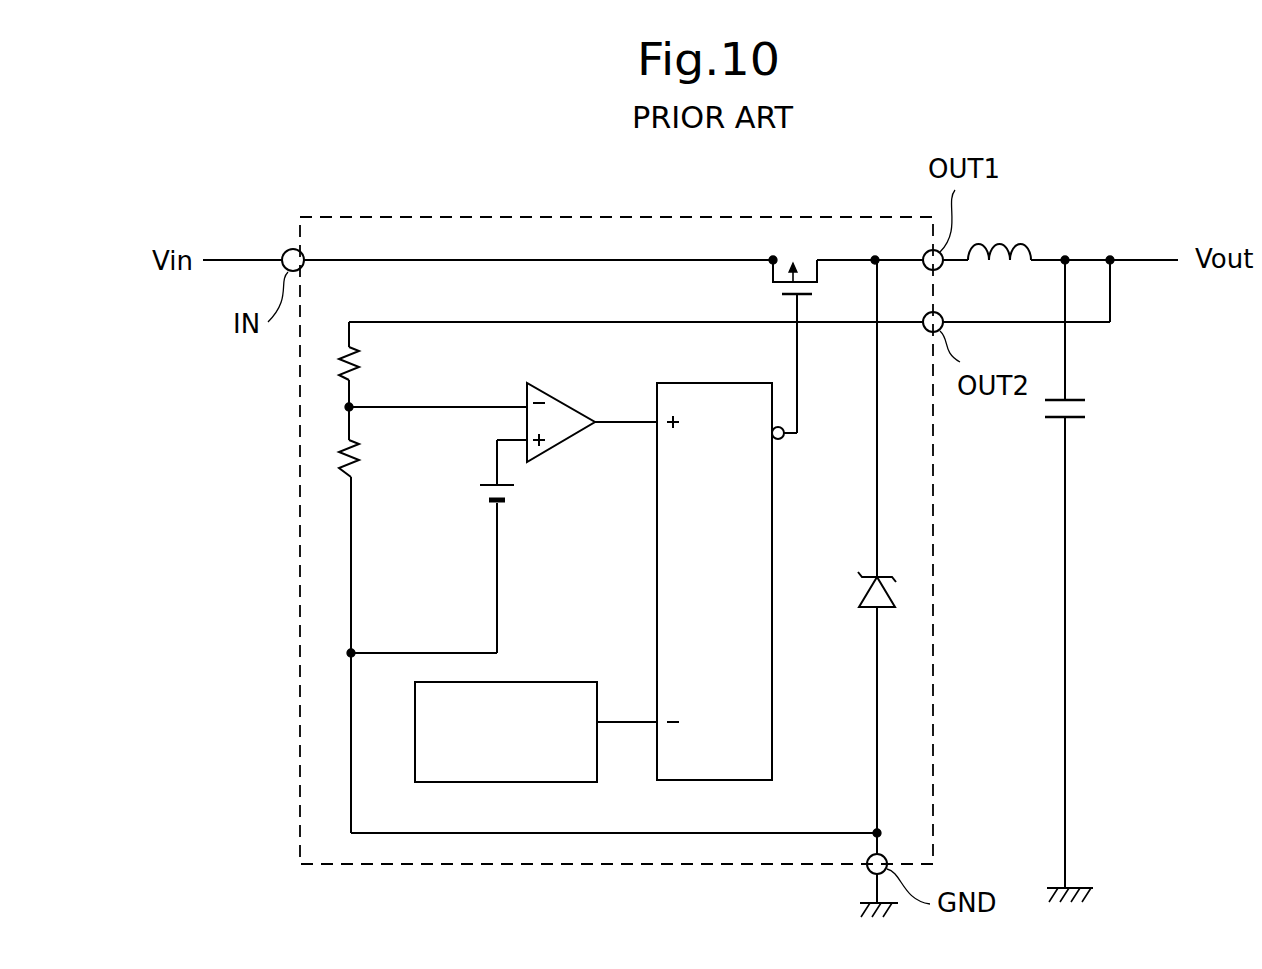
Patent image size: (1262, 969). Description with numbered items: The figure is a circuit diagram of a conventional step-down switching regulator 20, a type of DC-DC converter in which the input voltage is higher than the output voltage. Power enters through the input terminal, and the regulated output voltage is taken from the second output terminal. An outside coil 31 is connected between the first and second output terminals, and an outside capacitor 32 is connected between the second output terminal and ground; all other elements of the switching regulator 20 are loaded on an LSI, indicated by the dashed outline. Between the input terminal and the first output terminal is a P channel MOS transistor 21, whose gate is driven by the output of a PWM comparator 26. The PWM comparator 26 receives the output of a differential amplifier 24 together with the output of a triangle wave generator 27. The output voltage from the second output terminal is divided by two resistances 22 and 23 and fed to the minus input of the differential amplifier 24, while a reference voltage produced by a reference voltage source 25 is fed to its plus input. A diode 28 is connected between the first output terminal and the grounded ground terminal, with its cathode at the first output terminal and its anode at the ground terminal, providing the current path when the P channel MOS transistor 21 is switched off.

The switching regulator 20 is at (1021, 183).
The P channel MOS transistor 21 is at (795, 250).
The resistance 22 is at (365, 367).
The resistance 23 is at (365, 455).
The differential amplifier 24 is at (557, 400).
The reference voltage source 25 is at (517, 493).
The PWM comparator 26 is at (713, 383).
The triangle wave generator 27 is at (573, 682).
The diode 28 is at (840, 587).
The outside coil 31 is at (1020, 242).
The outside capacitor 32 is at (1088, 408).